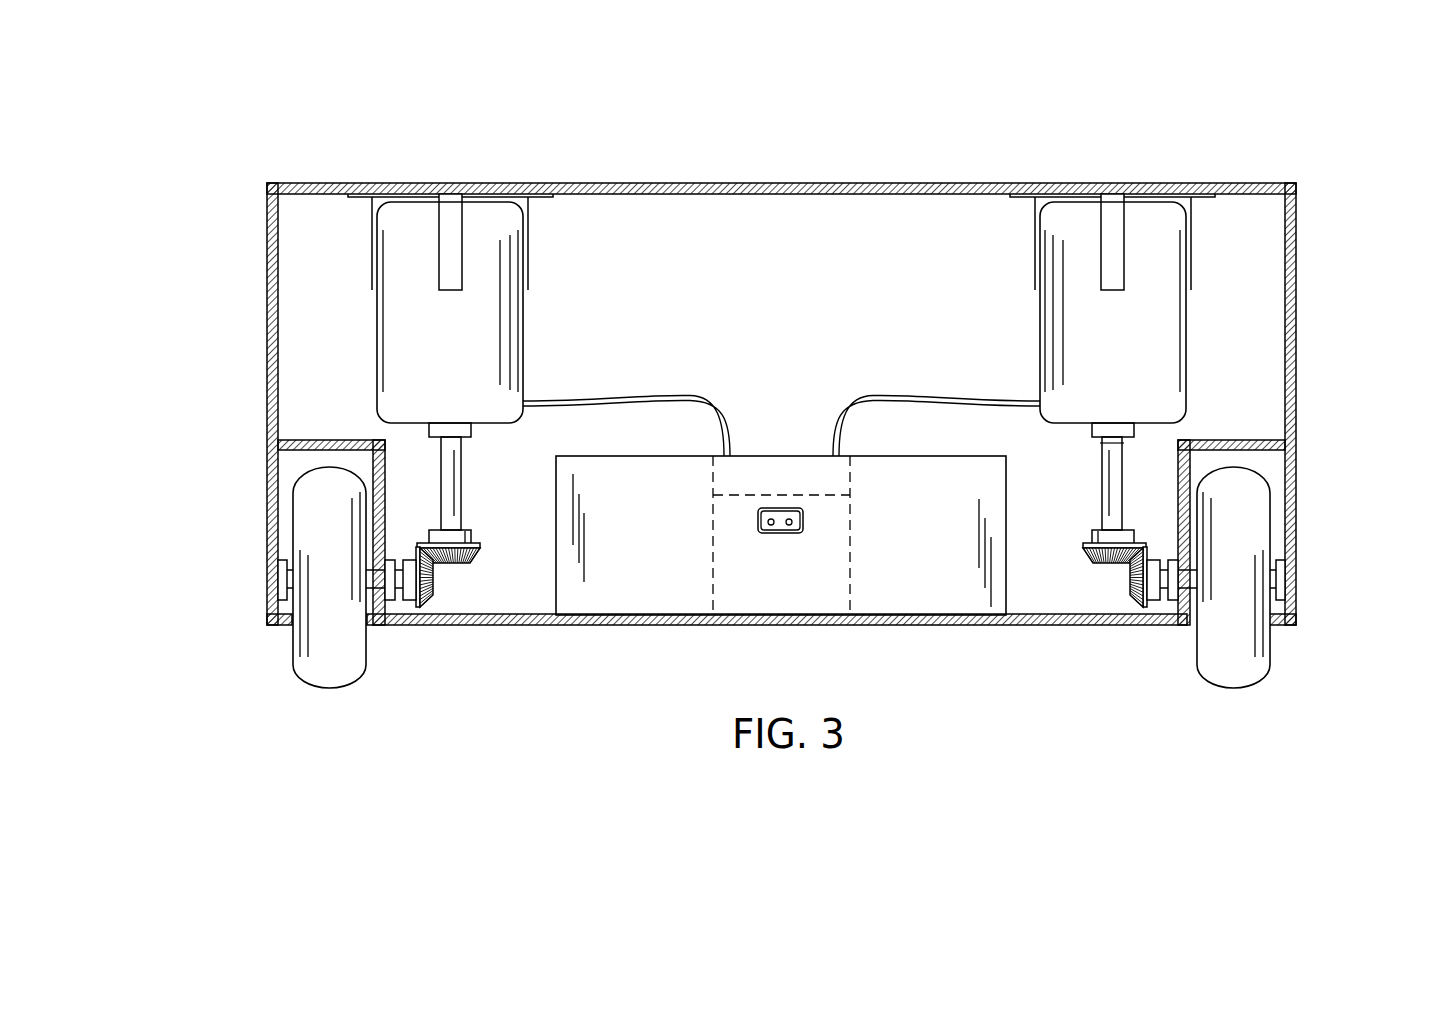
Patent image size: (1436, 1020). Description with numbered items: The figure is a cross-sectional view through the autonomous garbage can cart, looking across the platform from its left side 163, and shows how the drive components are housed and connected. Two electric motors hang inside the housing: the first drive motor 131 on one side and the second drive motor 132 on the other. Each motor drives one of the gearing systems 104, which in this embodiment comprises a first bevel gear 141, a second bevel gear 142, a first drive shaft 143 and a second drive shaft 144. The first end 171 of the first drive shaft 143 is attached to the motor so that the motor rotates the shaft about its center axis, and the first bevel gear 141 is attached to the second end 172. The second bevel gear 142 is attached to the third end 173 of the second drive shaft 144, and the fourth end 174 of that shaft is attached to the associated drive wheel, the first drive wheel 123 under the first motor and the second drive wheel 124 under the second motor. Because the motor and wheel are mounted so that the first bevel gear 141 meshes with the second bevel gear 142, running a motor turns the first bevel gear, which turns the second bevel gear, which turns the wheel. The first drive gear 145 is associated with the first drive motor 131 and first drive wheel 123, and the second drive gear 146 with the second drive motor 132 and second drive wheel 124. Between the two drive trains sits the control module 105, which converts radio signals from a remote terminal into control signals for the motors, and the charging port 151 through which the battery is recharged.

The left side 163 is at (255, 236).
The first drive motor 131 is at (412, 242).
The second drive motor 132 is at (1143, 227).
The gearing system 104 is at (445, 468).
The first drive shaft 143 is at (460, 486).
The first drive gear 145 is at (445, 468).
The second drive gear 146 is at (1100, 462).
The control module 105 is at (775, 456).
The charging port 151 is at (771, 533).
The first bevel gear 141 is at (468, 563).
The second bevel gear 142 is at (437, 587).
The second drive shaft 144 is at (391, 590).
The first drive wheel 123 is at (315, 678).
The second drive wheel 124 is at (1247, 678).
The first end 171 is at (1125, 452).
The second end 172 is at (1100, 518).
The third end 173 is at (1157, 567).
The fourth end 174 is at (1160, 563).